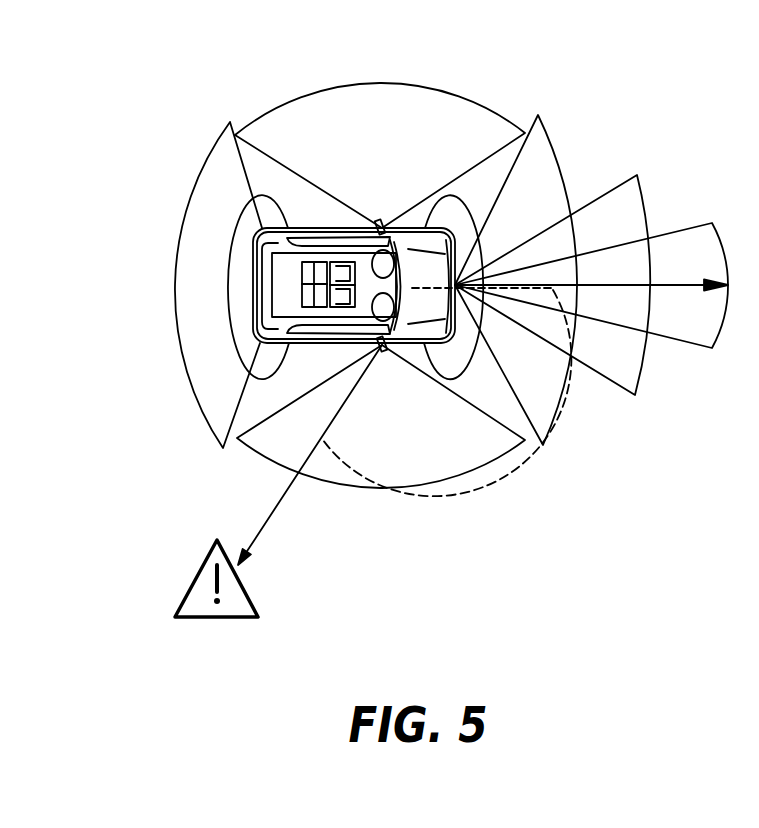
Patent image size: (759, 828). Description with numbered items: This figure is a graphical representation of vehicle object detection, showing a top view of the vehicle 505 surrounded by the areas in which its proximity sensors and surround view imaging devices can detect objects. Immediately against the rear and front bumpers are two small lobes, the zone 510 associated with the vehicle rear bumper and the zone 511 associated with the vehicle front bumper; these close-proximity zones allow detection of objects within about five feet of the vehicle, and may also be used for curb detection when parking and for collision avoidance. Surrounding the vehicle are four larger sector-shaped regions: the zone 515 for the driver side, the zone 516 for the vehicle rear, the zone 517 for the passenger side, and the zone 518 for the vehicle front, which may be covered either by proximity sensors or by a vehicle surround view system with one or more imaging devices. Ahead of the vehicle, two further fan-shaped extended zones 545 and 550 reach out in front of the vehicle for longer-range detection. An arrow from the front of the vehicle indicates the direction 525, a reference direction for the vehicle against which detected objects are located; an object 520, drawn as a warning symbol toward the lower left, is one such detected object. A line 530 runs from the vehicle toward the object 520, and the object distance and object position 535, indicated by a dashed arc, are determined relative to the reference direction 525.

The vehicle 505 is at (379, 222).
The zone associated with the vehicle rear bumper 510 is at (258, 194).
The zone associated with the vehicle front bumper 511 is at (468, 192).
The zone for vehicle side (driver side) 515 is at (373, 82).
The zone for vehicle rear 516 is at (173, 272).
The zone for vehicle side (passenger side) 517 is at (338, 488).
The zone for the vehicle front 518 is at (555, 423).
The object 520 is at (193, 620).
The direction 525 is at (672, 288).
The projected path to hazard 530 is at (265, 535).
The object distance / object position 535 is at (453, 490).
The extended zone 545 is at (620, 180).
The extended zone 550 is at (698, 222).